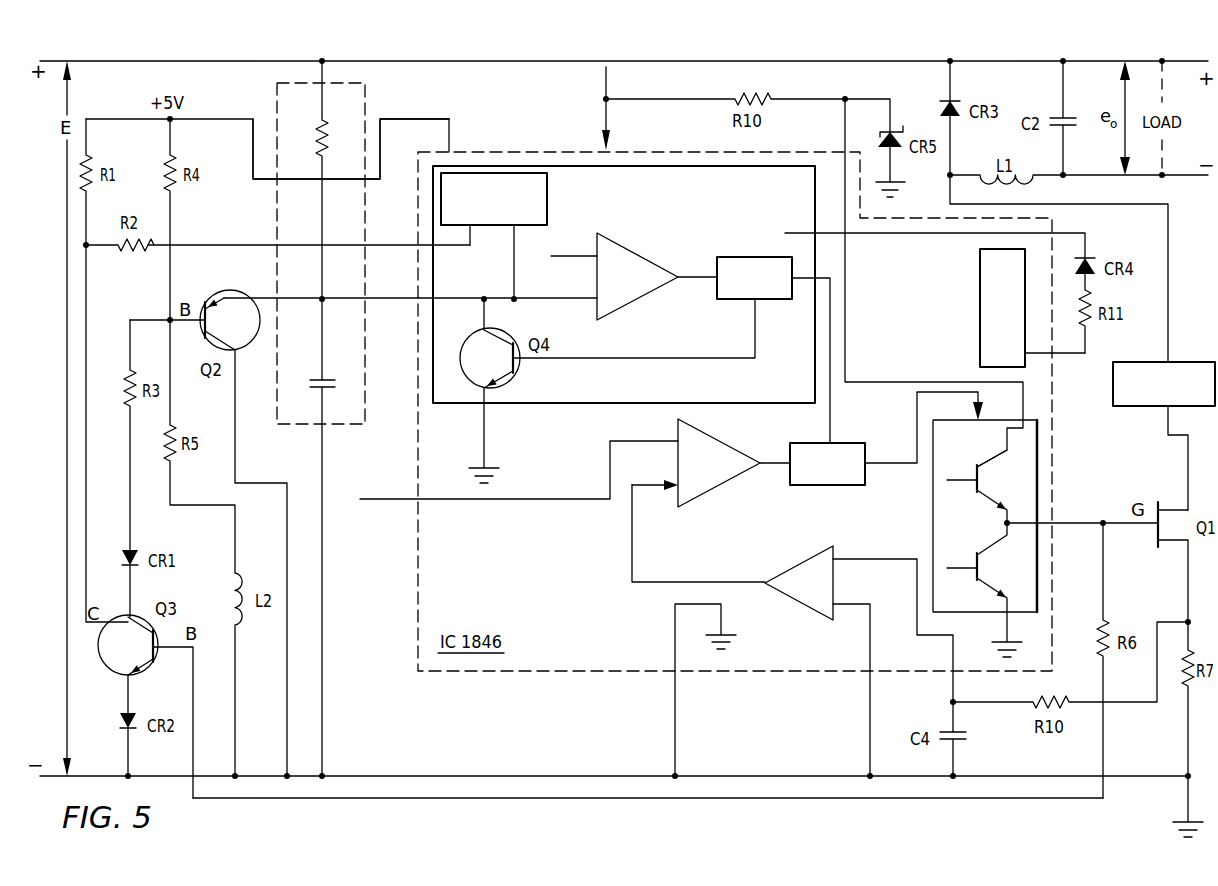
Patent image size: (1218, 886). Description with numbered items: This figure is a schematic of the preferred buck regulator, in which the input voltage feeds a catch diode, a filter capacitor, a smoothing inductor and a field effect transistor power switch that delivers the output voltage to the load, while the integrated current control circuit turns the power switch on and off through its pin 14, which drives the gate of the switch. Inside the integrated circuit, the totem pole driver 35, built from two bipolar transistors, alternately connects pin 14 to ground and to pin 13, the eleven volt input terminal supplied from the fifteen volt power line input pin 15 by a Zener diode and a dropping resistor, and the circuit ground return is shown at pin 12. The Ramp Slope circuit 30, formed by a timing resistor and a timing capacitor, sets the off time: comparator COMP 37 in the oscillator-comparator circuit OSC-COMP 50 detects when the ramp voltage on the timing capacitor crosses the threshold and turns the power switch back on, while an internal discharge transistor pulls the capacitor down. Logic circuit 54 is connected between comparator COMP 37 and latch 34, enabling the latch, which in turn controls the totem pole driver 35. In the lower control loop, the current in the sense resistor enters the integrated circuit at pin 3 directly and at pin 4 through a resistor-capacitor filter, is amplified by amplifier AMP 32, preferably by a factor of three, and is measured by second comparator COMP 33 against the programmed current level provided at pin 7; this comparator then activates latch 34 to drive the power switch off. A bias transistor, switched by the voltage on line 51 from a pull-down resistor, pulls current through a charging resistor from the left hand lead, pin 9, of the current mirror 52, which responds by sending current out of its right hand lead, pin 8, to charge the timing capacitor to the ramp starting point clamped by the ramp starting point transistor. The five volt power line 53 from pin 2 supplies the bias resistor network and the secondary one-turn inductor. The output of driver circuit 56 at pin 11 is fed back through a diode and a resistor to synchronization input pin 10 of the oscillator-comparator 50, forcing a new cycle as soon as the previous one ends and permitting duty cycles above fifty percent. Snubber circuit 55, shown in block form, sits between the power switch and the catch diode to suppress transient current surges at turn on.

The pin 2 is at (468, 132).
The pin 3 is at (852, 691).
The pin 4 is at (894, 645).
The pin 7 is at (519, 470).
The pin 8 is at (410, 282).
The pin 9 is at (309, 227).
The pin 10 is at (953, 235).
The pin 11 is at (1059, 370).
The IC pin 12 (ground) 12 is at (685, 691).
The pin 13 is at (914, 281).
The pin 14 is at (1082, 541).
The pin 15 is at (629, 108).
The Ramp Slope circuit 30 is at (294, 426).
The amplifier AMP 32 is at (798, 601).
The second comparator COMP2 33 is at (714, 487).
The latch 34 is at (816, 486).
The totem pole driver 35 is at (931, 522).
The comparator COMP1 37 is at (636, 305).
The oscillator-comparator circuit OSC-COMP 50 is at (546, 405).
The line 51 is at (740, 800).
The current mirror 52 is at (548, 194).
The +5 volt DC power line 53 is at (420, 118).
The logic circuit 54 is at (780, 300).
The snubber circuit 55 is at (1130, 407).
The driver circuit 56 is at (980, 317).